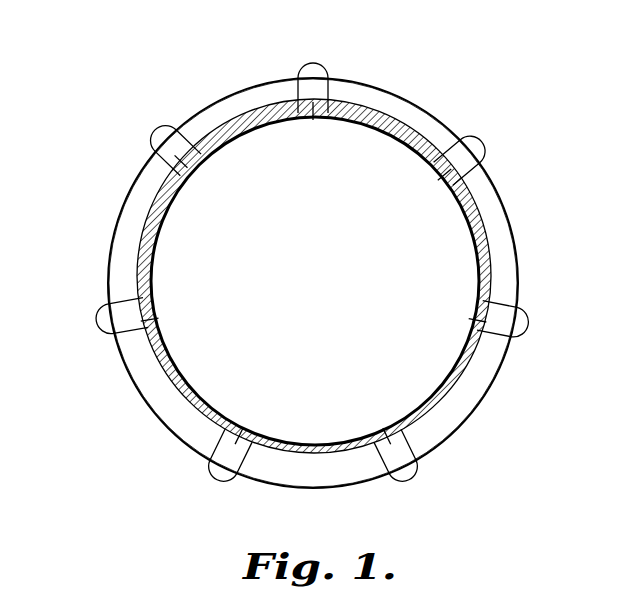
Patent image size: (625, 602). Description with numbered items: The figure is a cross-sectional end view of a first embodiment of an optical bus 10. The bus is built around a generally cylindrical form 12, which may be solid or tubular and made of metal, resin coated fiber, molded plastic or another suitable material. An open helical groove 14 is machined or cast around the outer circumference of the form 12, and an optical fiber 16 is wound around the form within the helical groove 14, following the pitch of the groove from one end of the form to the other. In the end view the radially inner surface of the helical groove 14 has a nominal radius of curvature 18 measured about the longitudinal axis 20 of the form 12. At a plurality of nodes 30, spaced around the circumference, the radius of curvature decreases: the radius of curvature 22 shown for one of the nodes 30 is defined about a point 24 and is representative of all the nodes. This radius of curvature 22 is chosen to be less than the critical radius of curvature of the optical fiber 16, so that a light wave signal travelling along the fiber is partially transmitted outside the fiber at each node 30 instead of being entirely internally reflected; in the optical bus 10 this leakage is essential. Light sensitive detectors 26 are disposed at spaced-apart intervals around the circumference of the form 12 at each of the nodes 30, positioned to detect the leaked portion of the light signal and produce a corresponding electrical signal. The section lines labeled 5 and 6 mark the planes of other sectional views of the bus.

The optical bus 10 is at (138, 427).
The cylindrical form 12 is at (205, 405).
The helical groove 14 is at (512, 269).
The optical fiber 16 is at (482, 355).
The nominal radius of curvature 18 is at (468, 243).
The longitudinal axis 20 is at (315, 280).
The radius of curvature 22 is at (470, 316).
The point 24 is at (448, 310).
The light sensitive detectors 26 is at (318, 70).
The nodes 30 is at (313, 108).
The section line 5- 5 is at (203, 70).
The section line 6- 6 is at (65, 338).